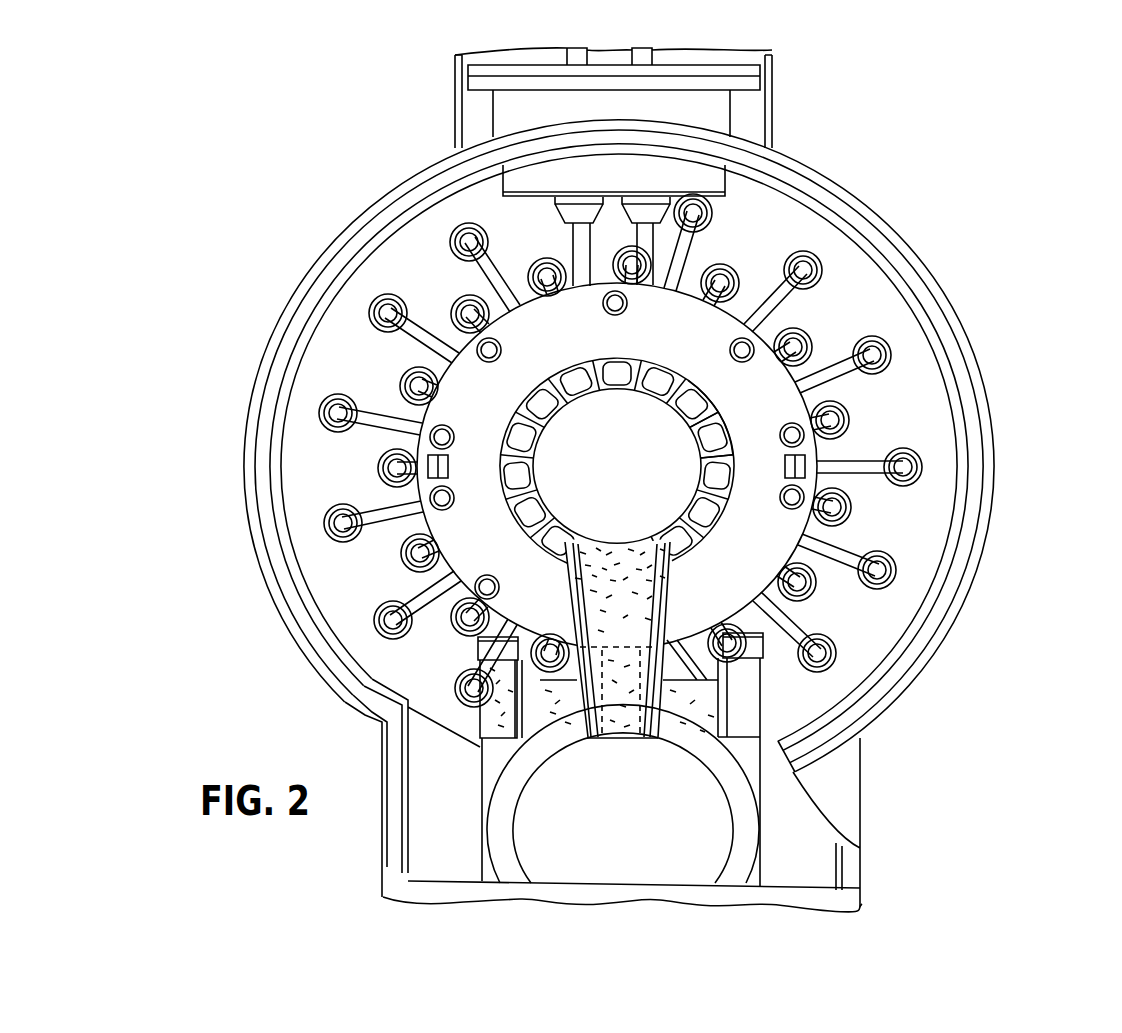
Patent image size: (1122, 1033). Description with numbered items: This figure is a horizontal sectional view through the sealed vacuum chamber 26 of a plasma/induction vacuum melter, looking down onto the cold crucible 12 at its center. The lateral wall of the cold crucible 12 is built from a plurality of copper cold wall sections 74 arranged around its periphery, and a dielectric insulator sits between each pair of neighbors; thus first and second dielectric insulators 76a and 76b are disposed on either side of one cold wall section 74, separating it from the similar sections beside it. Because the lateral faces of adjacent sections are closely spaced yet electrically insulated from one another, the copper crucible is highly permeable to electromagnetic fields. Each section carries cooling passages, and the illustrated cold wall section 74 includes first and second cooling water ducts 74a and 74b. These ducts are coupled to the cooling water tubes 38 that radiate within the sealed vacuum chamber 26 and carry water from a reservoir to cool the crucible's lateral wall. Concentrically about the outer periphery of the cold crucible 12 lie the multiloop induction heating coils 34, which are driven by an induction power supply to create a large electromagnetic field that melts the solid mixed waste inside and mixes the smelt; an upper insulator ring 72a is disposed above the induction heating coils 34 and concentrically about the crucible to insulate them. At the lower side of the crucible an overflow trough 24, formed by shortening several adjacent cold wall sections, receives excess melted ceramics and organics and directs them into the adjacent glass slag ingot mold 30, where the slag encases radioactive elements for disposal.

The cold crucible 12 is at (631, 503).
The overflow trough 24 is at (632, 607).
The sealed vacuum chamber 26 is at (295, 642).
The glass slag ingot mold 30 is at (640, 835).
The induction heating coils 34 is at (578, 242).
The cooling water tubes 38 is at (837, 357).
The upper insulator ring 72a is at (780, 530).
The cold wall section 74 is at (704, 398).
The first cooling water duct 74a is at (684, 394).
The second cooling water duct 74b is at (690, 423).
The first dielectric insulator 76a is at (687, 395).
The second dielectric insulator 76b is at (718, 428).